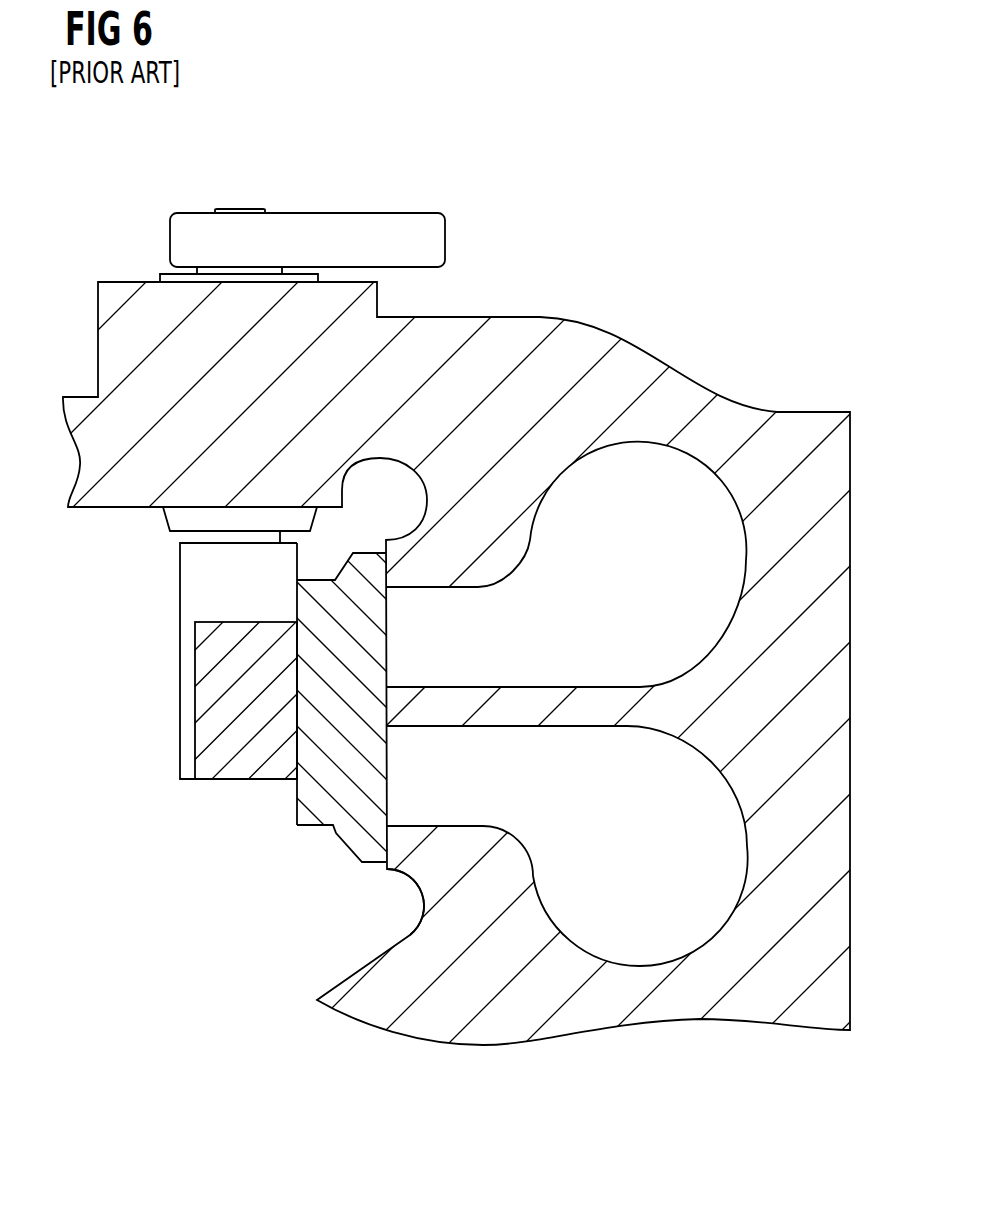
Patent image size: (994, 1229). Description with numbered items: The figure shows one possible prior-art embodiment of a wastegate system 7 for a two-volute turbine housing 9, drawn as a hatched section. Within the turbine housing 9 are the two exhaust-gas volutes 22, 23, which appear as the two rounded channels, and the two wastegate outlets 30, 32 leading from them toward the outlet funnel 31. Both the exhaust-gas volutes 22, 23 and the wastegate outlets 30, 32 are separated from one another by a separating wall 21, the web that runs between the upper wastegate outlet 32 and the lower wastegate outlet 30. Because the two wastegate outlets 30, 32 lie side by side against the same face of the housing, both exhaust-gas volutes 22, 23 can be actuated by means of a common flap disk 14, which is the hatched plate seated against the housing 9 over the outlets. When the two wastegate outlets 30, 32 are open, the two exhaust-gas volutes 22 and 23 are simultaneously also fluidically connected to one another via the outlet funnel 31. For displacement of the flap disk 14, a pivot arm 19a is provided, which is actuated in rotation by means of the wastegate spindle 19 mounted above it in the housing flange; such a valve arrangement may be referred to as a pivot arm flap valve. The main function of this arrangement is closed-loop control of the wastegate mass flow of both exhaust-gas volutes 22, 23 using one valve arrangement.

The wastegate system 7 is at (152, 688).
The two-volute turbine housing 9 is at (835, 698).
The flap disk 14 is at (328, 782).
The wastegate spindle 19 is at (200, 537).
The pivot arm 19a is at (203, 610).
The separating wall 21 is at (597, 707).
The exhaust-gas volute 22 is at (637, 573).
The exhaust-gas volute 23 is at (637, 873).
The wastegate outlet 30 is at (450, 797).
The outlet funnel 31 is at (375, 928).
The wastegate outlet 32 is at (449, 655).